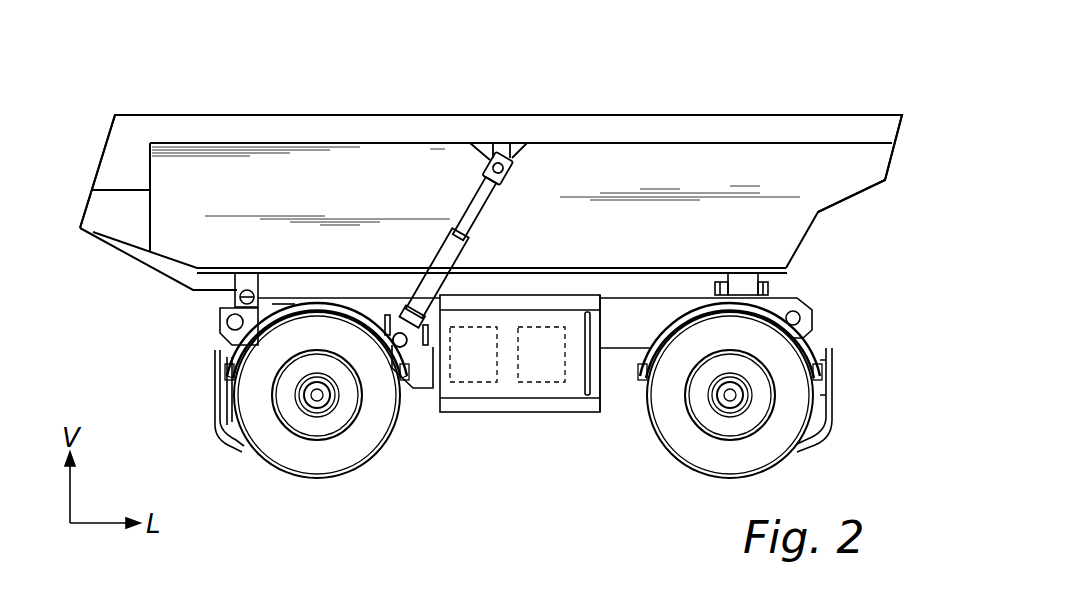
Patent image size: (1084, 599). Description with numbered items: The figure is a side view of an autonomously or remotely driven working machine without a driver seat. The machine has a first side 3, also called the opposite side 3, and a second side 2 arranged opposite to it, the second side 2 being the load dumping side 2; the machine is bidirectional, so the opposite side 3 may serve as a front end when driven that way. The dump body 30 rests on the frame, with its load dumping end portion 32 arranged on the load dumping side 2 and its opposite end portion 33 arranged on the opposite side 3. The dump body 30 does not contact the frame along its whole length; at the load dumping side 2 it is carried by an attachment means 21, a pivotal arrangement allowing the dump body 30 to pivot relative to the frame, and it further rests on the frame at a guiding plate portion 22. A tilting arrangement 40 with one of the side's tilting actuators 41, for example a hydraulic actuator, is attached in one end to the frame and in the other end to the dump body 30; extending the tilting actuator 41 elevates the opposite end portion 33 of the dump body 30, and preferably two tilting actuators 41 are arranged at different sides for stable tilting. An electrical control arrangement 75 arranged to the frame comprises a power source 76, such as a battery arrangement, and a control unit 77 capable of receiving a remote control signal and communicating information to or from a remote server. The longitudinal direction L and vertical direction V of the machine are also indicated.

The second side 2 is at (196, 338).
The first side 3 is at (805, 282).
The attachment means 21 is at (238, 294).
The guiding plate portion 22 is at (747, 290).
The dump body 30 is at (682, 86).
The load dumping end portion 32 is at (106, 143).
The opposite end portion 33 is at (890, 112).
The tilting arrangement 40 is at (478, 418).
The tilting actuator 41 is at (468, 218).
The electrical control arrangement 75 is at (506, 395).
The power source 76 is at (551, 368).
The control unit 77 is at (467, 365).